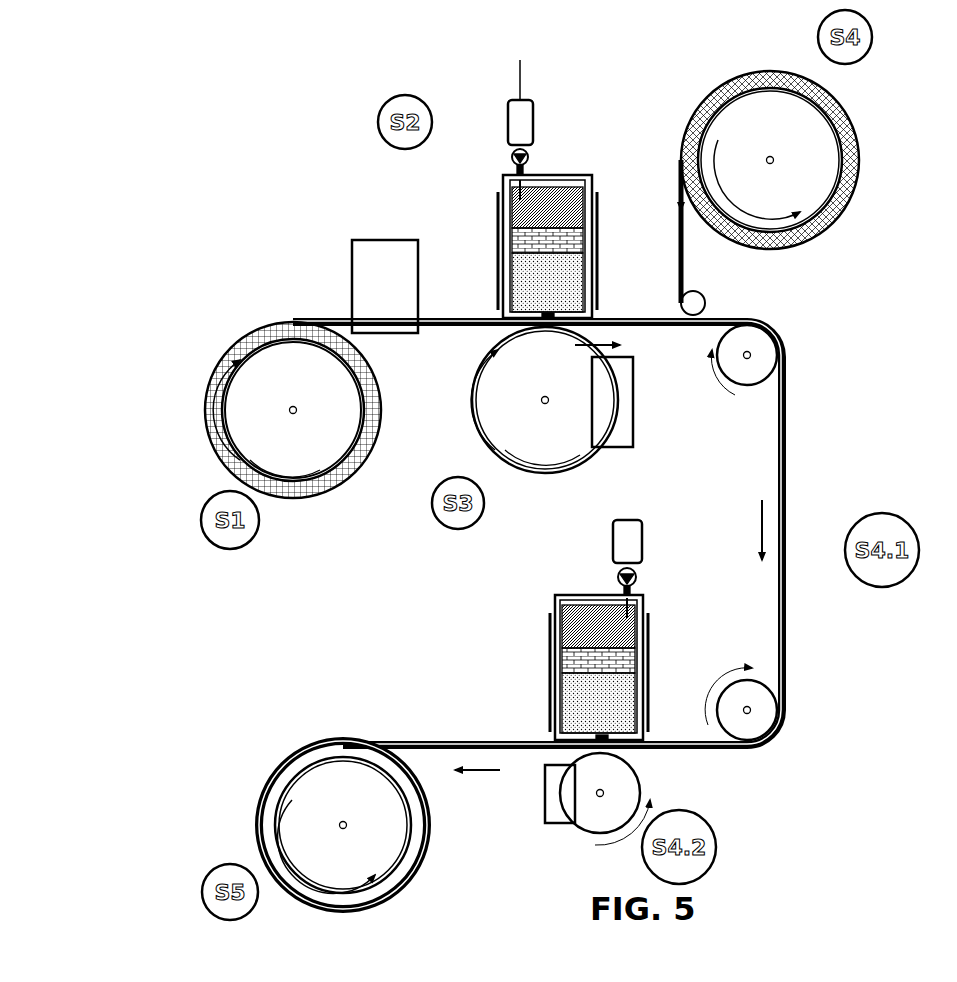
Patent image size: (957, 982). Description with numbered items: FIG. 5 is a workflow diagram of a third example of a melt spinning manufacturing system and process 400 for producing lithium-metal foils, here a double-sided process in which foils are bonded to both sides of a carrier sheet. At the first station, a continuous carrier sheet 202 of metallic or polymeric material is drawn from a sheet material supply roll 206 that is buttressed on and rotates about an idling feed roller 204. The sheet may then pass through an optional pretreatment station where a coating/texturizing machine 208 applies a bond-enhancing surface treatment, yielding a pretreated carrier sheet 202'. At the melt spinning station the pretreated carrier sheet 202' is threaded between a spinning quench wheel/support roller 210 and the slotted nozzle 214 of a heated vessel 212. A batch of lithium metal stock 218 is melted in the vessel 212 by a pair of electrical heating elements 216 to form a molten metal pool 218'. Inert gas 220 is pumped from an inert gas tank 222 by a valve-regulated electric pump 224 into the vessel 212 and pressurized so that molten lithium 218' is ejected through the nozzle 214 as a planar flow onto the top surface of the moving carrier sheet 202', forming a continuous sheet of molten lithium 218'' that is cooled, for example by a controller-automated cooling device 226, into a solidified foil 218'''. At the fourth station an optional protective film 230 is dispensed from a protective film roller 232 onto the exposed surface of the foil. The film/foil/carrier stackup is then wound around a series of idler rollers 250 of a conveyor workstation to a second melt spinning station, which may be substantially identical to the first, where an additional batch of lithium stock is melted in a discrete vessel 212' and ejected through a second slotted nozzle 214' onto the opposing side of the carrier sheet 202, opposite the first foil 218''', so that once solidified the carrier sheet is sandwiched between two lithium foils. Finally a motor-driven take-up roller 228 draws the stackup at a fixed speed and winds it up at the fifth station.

The manufacturing system and attendant manufacturing process 400 is at (185, 80).
The carrier sheet 202 is at (534, 480).
The idling feed roller 204 is at (258, 345).
The sheet material supply roll 206 is at (222, 375).
The coating/texturizing machine 208 is at (357, 240).
The quench wheel/support roller 210 is at (490, 445).
The heated vessel 212 is at (553, 213).
The discrete vessel 212' is at (591, 630).
The slotted nozzle 214 is at (463, 344).
The slotted nozzle 214' is at (629, 795).
The heating elements 216 is at (498, 210).
The lithium metal stock 218 is at (587, 232).
The molten metal pool 218' is at (506, 270).
The continuous sheet of molten Li metal 218'' is at (614, 296).
The Li-metal foil 218''' is at (644, 278).
The inert gas 220 is at (518, 195).
The inert gas tank 222 is at (514, 88).
The valve-regulated unidirectional electric pump 224 is at (512, 157).
The cooling device 226 is at (633, 410).
The take-up roller 228 is at (292, 770).
The protective film 230 is at (747, 316).
The protective film roller 232 is at (835, 118).
The idler rollers 250 is at (762, 352).
The pretreated carrier sheet 202' is at (571, 497).